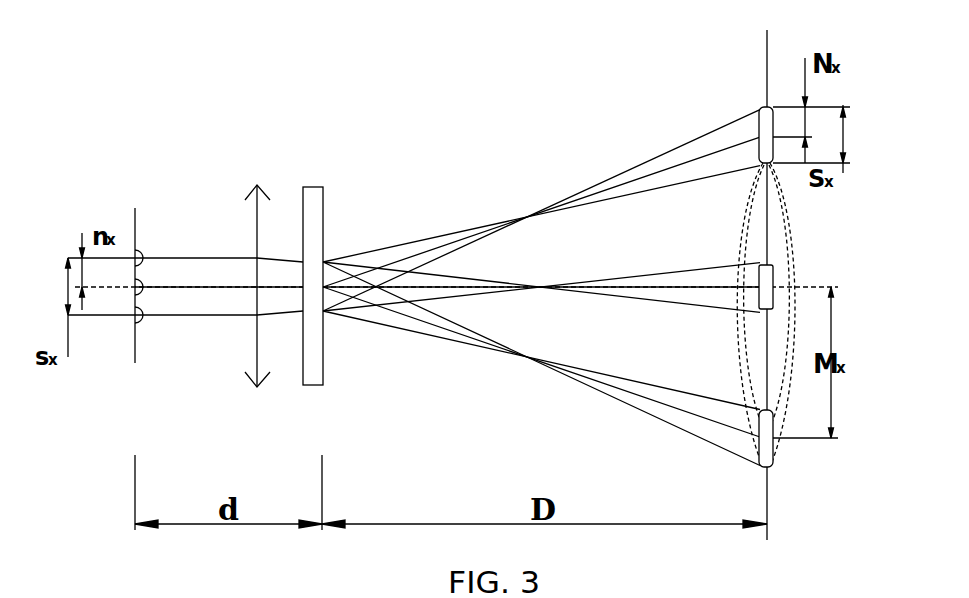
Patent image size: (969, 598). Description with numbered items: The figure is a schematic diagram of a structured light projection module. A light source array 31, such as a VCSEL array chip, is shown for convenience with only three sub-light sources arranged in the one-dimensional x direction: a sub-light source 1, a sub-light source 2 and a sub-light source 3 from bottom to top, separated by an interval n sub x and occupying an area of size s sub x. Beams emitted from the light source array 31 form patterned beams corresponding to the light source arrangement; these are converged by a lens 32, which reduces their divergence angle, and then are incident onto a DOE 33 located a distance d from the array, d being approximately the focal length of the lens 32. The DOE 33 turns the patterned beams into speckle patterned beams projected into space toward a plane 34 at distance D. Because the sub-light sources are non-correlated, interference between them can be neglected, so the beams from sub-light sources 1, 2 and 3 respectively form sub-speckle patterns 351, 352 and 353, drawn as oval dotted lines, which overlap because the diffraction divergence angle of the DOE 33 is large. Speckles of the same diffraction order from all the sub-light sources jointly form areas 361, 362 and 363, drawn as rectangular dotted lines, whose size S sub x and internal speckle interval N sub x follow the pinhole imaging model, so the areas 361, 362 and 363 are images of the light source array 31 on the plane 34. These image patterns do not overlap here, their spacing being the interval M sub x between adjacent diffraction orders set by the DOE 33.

The sub-light source 1 is at (140, 322).
The sub-light source 2 is at (141, 288).
The sub-light source 3 is at (141, 255).
The light source array 31 is at (135, 217).
The lens 32 is at (259, 198).
The DOE 33 is at (323, 220).
The plane 34 is at (765, 55).
The sub-speckle pattern 351 is at (755, 128).
The sub-speckle pattern 352 is at (753, 157).
The sub-speckle pattern 353 is at (757, 162).
The area 361 is at (774, 128).
The area 362 is at (774, 270).
The area 363 is at (775, 452).